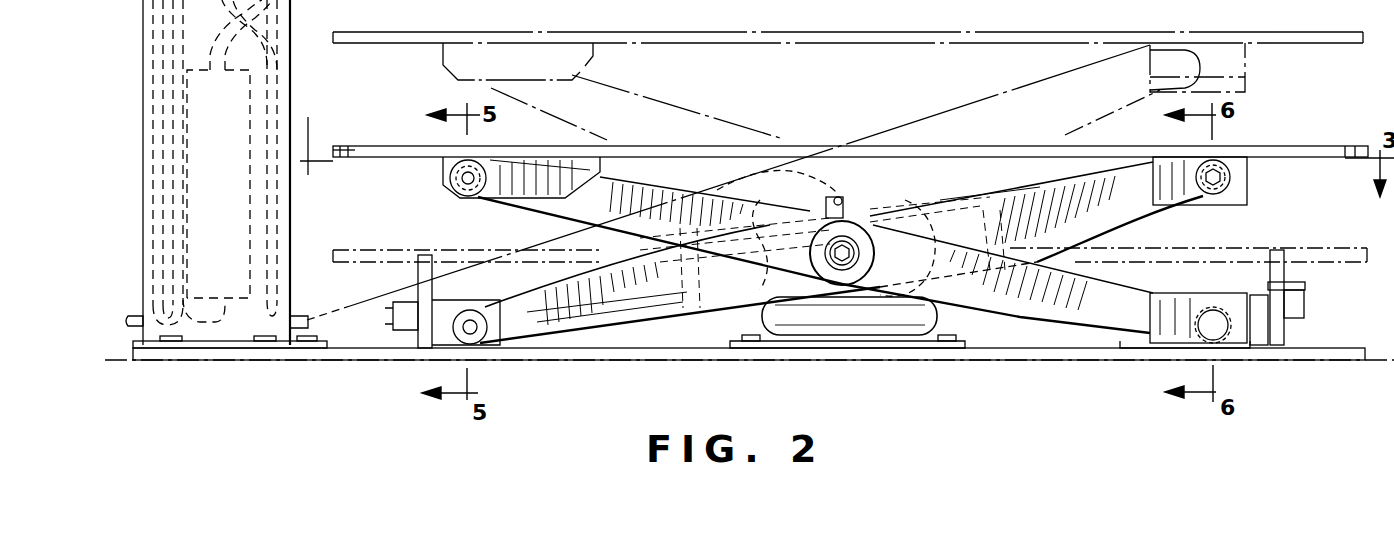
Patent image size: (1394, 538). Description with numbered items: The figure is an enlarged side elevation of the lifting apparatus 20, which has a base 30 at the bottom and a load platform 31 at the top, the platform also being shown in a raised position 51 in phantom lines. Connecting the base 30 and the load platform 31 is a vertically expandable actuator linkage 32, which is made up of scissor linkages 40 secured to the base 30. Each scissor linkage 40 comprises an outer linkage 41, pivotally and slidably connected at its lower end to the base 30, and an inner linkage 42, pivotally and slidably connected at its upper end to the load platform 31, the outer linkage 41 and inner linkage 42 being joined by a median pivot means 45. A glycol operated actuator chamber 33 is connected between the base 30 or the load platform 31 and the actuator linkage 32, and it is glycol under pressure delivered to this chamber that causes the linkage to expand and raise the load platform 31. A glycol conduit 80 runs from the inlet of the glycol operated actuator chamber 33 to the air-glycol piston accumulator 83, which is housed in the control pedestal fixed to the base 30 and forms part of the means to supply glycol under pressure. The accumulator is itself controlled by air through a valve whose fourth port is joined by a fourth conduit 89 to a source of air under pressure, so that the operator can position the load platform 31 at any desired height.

The lifting apparatus 20 is at (640, 375).
The base 30 is at (1118, 353).
The load platform 31 is at (1290, 148).
The vertically expandable actuator linkage 32 is at (518, 213).
The glycol operated actuator chamber 33 is at (842, 316).
The scissor linkage 40 is at (978, 180).
The outer linkage 41 is at (1071, 313).
The inner linkage 42 is at (1085, 218).
The median pivot means 45 is at (870, 267).
The raised platform position 51 is at (1010, 30).
The glycol conduit 80 is at (182, 48).
The air-glycol piston accumulator 83 is at (255, 188).
The fourth conduit 89 is at (135, 325).